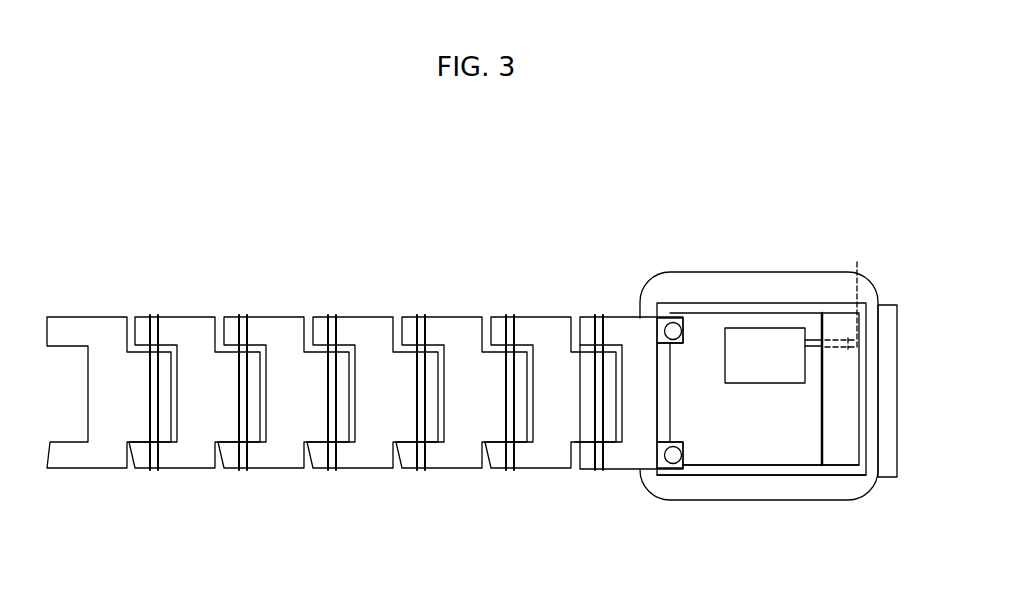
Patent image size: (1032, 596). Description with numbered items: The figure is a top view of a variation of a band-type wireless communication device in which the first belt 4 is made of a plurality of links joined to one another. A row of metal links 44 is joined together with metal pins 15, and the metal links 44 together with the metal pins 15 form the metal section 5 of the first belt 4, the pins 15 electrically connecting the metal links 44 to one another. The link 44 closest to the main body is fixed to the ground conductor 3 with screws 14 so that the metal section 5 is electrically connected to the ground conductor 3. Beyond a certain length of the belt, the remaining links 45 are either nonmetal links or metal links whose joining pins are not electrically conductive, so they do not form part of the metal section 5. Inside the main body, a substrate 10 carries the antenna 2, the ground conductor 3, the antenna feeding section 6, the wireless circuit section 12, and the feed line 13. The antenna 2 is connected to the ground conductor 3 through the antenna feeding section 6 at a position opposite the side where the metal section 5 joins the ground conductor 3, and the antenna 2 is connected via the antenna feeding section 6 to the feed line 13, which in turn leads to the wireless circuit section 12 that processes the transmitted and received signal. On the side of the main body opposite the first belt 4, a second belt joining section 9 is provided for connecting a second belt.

The antenna 2 is at (846, 450).
The ground conductor 3 is at (705, 330).
The first belt 4 is at (118, 272).
The metal section 5 is at (273, 282).
The antenna feeding section 6 is at (857, 262).
The second belt joining section 9 is at (888, 310).
The substrate 10 is at (780, 470).
The wireless circuit section 12 is at (763, 337).
The feed line 13 is at (815, 335).
The screws 14 is at (676, 321).
The pins 15 is at (329, 317).
The links 44 is at (295, 318).
The links 45 is at (92, 320).